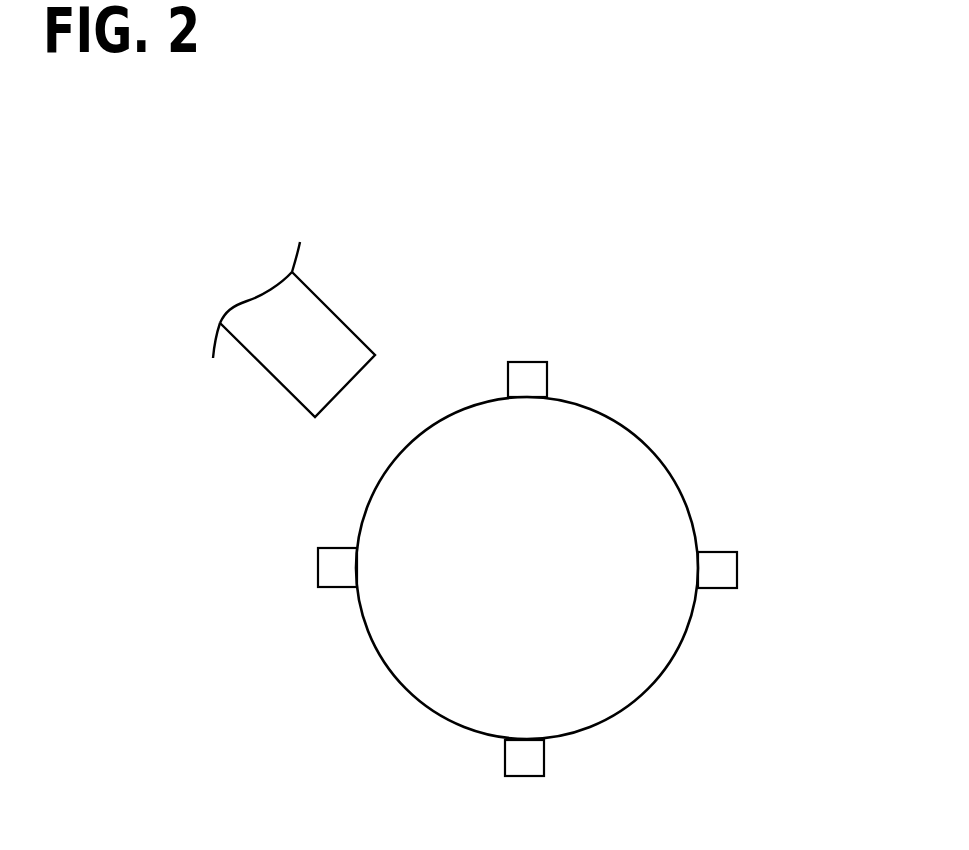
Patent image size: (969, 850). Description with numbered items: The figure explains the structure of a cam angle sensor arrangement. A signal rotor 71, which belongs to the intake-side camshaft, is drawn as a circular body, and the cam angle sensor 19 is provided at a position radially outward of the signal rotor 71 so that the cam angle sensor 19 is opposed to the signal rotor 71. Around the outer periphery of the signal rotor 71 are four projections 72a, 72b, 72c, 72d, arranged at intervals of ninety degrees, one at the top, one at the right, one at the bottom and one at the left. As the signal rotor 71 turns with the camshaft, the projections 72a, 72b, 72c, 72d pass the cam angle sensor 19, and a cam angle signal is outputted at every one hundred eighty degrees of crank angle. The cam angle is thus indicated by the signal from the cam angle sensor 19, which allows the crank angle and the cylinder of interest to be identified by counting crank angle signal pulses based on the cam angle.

The cam angle sensor 19 is at (317, 328).
The signal rotor 71 is at (642, 658).
The projection 72a is at (547, 382).
The projection 72b is at (718, 552).
The projection 72c is at (544, 757).
The projection 72d is at (333, 548).